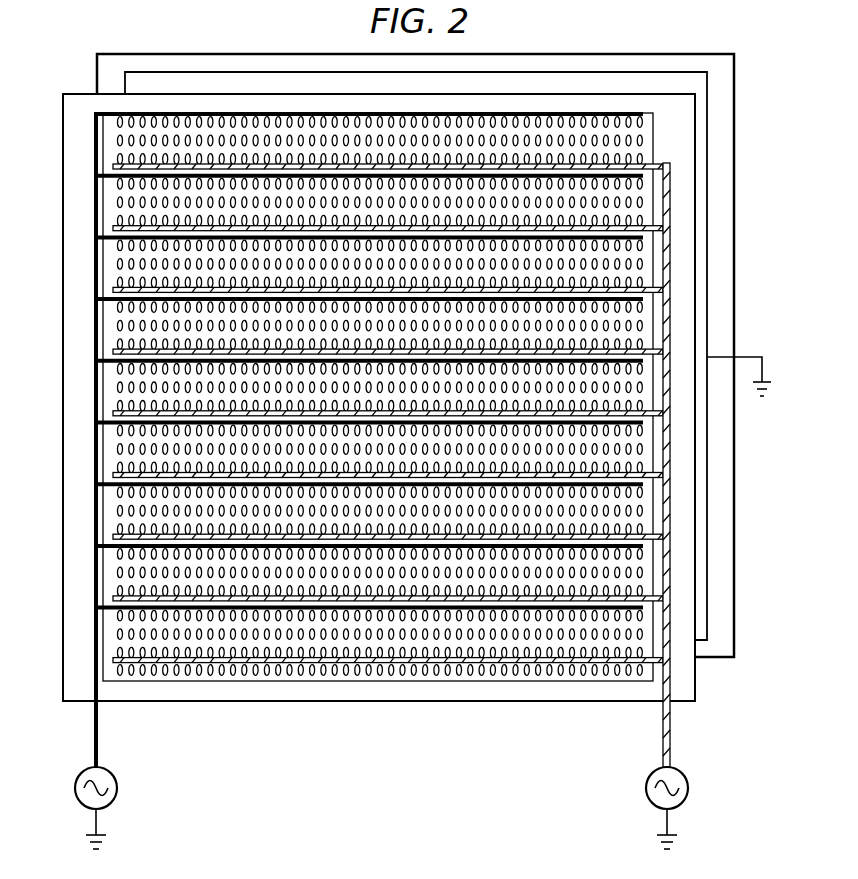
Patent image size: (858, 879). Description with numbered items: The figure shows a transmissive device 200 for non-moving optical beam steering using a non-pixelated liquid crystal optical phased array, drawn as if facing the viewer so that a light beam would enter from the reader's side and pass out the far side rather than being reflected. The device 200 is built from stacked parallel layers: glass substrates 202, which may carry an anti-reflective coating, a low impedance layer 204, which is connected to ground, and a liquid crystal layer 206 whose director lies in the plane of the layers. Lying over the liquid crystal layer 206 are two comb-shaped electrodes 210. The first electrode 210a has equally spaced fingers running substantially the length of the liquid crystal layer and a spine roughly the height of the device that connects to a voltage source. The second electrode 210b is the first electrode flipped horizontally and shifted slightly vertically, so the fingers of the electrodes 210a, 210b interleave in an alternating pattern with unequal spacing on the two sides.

The device 200 is at (771, 158).
The glass substrates 202 is at (695, 210).
The low impedance layer 204 is at (707, 287).
The liquid crystal layer 206 is at (647, 565).
The electrodes 210 is at (670, 666).
The first electrode 210a is at (98, 740).
The second electrode 210b is at (672, 740).